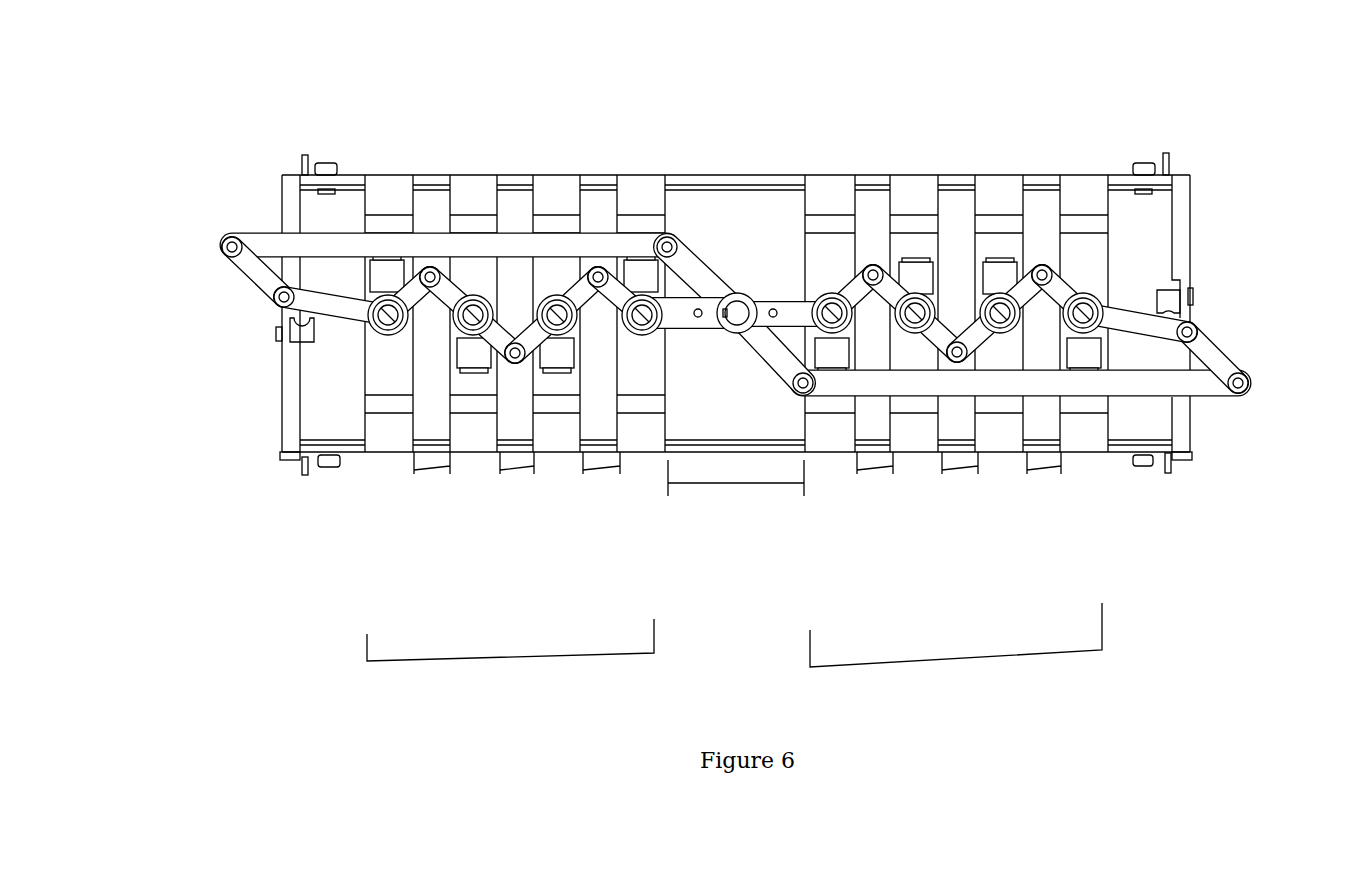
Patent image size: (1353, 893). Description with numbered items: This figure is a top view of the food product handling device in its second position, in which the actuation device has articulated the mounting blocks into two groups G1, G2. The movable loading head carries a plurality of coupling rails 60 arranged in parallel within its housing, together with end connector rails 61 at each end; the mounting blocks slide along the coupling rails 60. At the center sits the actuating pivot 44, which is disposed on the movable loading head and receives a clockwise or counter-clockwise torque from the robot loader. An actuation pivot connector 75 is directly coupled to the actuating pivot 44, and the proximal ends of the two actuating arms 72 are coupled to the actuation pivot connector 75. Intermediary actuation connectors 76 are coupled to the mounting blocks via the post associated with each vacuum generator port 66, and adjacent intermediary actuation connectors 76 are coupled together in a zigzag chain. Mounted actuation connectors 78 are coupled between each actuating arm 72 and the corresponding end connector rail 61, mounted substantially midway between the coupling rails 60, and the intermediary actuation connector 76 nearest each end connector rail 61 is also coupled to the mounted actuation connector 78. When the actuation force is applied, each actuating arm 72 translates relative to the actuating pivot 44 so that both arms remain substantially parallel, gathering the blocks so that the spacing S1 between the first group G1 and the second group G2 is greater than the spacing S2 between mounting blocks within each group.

The actuating pivot 44 is at (740, 300).
The coupling rails 60 is at (1127, 175).
The end connector rails 61 is at (1178, 242).
The vacuum generator port 66 is at (385, 268).
The actuating arm 72 is at (467, 250).
The actuation pivot connector 75 is at (683, 283).
The intermediary actuation connectors 76 is at (580, 297).
The mounted actuation connectors 78 is at (260, 272).
The spacing between groups S1 is at (736, 498).
The spacing between mounting blocks within a group S2 is at (739, 483).
The first group G1 is at (510, 668).
The second group G2 is at (956, 658).